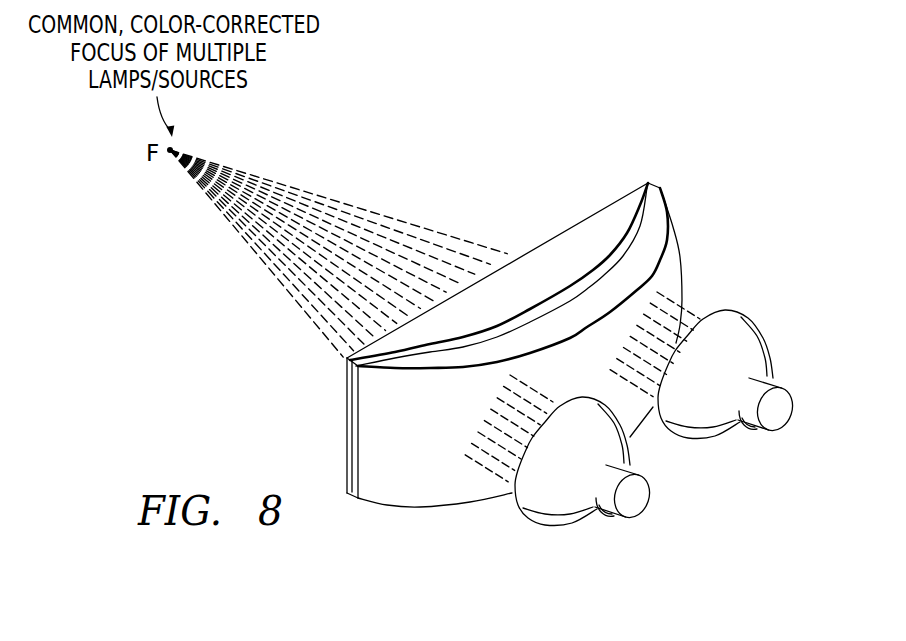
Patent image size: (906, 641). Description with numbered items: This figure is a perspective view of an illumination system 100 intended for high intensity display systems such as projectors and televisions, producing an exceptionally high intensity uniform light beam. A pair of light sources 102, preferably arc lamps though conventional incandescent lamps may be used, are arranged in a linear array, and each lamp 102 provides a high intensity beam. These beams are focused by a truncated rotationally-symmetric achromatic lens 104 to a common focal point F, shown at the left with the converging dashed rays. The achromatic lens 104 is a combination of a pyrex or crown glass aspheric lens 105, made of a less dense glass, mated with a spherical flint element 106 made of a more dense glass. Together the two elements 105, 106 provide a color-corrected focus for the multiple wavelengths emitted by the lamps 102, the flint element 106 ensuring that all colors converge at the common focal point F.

The illumination system 100 is at (527, 171).
The light sources 102 is at (552, 518).
The truncated rotationally-symmetric achromatic lens 104 is at (661, 175).
The aspheric lens 105 is at (680, 252).
The spherical flint element 106 is at (600, 217).